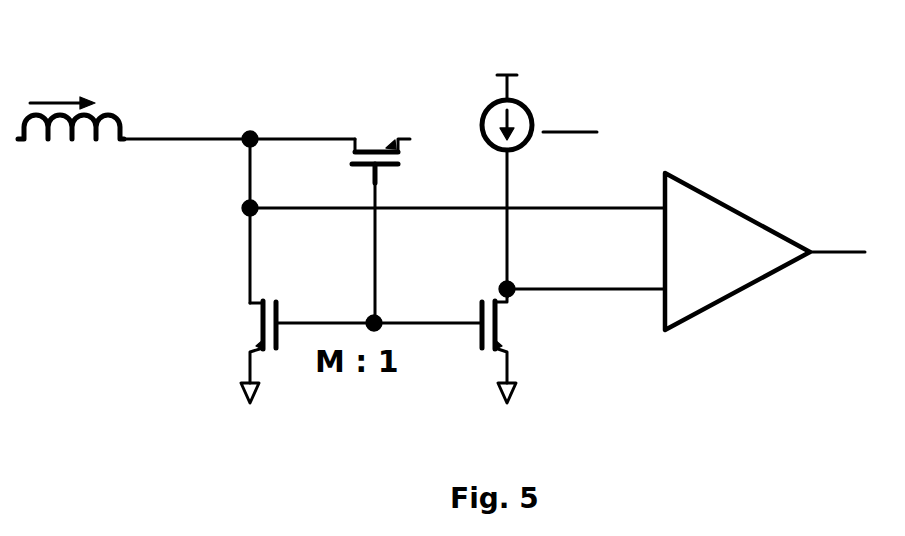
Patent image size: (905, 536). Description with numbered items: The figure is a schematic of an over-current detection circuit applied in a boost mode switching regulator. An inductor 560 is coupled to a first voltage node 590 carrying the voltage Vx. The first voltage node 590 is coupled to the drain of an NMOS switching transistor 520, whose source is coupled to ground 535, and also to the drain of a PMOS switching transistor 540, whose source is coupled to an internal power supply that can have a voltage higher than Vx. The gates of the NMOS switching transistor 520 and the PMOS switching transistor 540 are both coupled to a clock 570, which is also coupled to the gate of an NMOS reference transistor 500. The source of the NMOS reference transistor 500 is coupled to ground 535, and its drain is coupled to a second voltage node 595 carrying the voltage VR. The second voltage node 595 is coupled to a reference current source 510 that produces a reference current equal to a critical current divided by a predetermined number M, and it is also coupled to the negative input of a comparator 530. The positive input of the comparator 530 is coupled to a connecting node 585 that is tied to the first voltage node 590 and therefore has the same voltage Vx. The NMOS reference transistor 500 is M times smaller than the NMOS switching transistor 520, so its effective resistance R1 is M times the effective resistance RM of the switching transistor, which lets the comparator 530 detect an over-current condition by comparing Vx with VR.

The NMOS reference transistor 500 is at (488, 345).
The reference current source 510 is at (518, 103).
The NMOS switching transistor 520 is at (262, 328).
The comparator 530 is at (710, 195).
The ground 535 is at (260, 392).
The PMOS switching transistor 540 is at (372, 148).
The inductor 560 is at (77, 125).
The clock 570 is at (365, 318).
The connecting node 585 is at (245, 213).
The first voltage node 590 is at (258, 134).
The second voltage node 595 is at (512, 293).